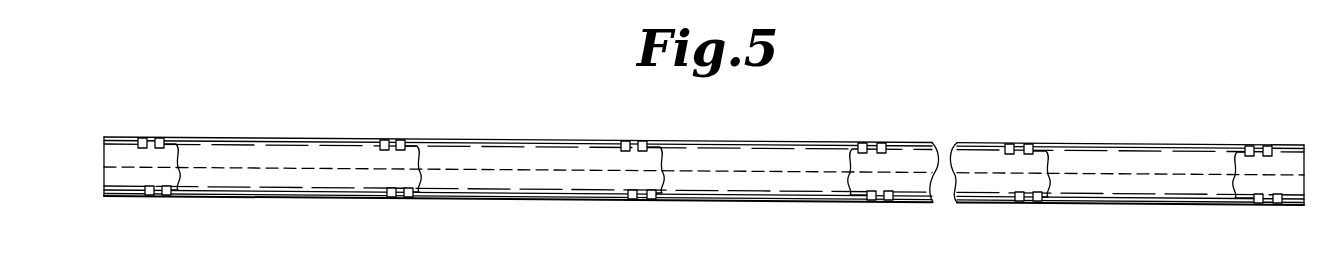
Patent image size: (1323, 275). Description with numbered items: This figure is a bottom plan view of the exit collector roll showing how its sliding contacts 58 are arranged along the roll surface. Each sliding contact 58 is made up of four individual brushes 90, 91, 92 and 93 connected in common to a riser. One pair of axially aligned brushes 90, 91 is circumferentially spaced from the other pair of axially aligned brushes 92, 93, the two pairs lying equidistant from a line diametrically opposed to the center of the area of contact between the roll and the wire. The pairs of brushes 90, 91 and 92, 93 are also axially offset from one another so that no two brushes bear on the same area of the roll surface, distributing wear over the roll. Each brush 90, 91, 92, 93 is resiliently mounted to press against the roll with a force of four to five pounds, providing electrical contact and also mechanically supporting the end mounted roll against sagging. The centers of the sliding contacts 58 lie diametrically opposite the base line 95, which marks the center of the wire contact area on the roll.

The sliding contact 58 is at (186, 154).
The brush 90 is at (142, 138).
The brush 91 is at (161, 138).
The brush 92 is at (149, 196).
The brush 93 is at (167, 196).
The base line 95 is at (553, 168).